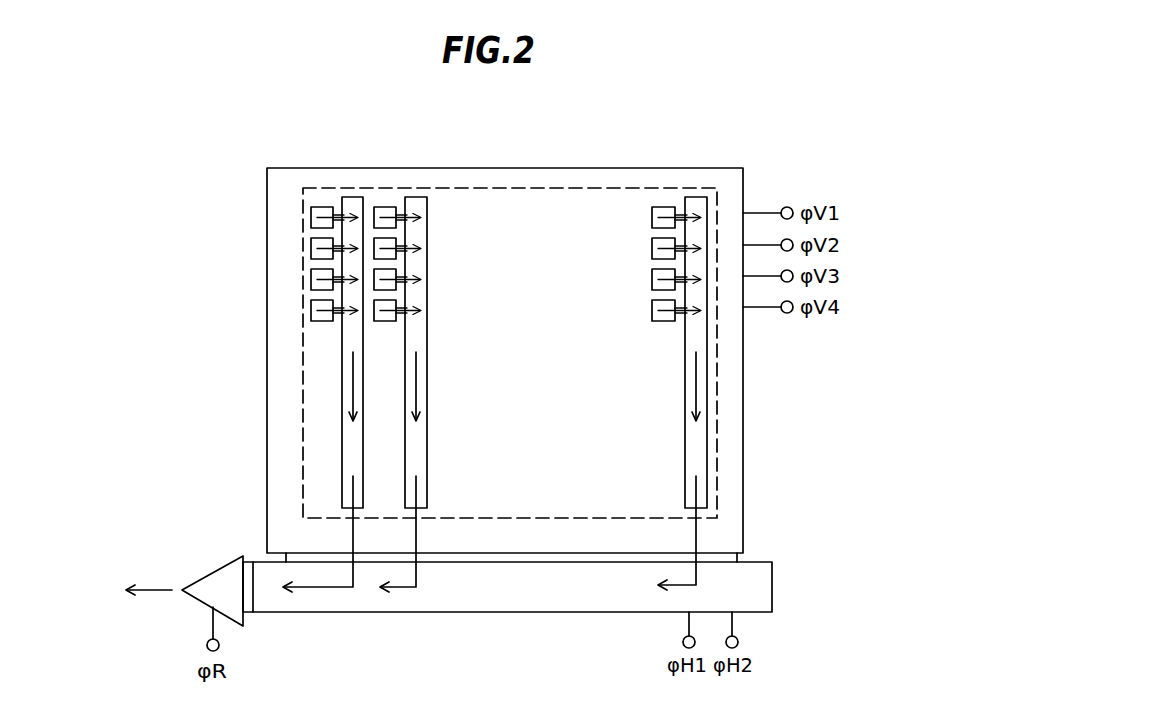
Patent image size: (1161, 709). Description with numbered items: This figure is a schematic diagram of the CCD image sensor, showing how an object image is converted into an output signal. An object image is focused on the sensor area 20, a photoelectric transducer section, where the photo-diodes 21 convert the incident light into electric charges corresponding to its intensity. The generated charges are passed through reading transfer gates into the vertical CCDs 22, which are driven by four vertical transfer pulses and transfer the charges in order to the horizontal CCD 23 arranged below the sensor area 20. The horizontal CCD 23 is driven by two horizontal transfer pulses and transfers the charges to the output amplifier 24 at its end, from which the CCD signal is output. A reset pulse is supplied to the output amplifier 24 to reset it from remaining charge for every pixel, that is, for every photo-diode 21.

The sensor area 20 is at (569, 186).
The photo-diodes 21 is at (383, 207).
The vertical CCDs 22 is at (684, 363).
The horizontal CCD 23 is at (455, 612).
The output amplifier 24 is at (216, 567).